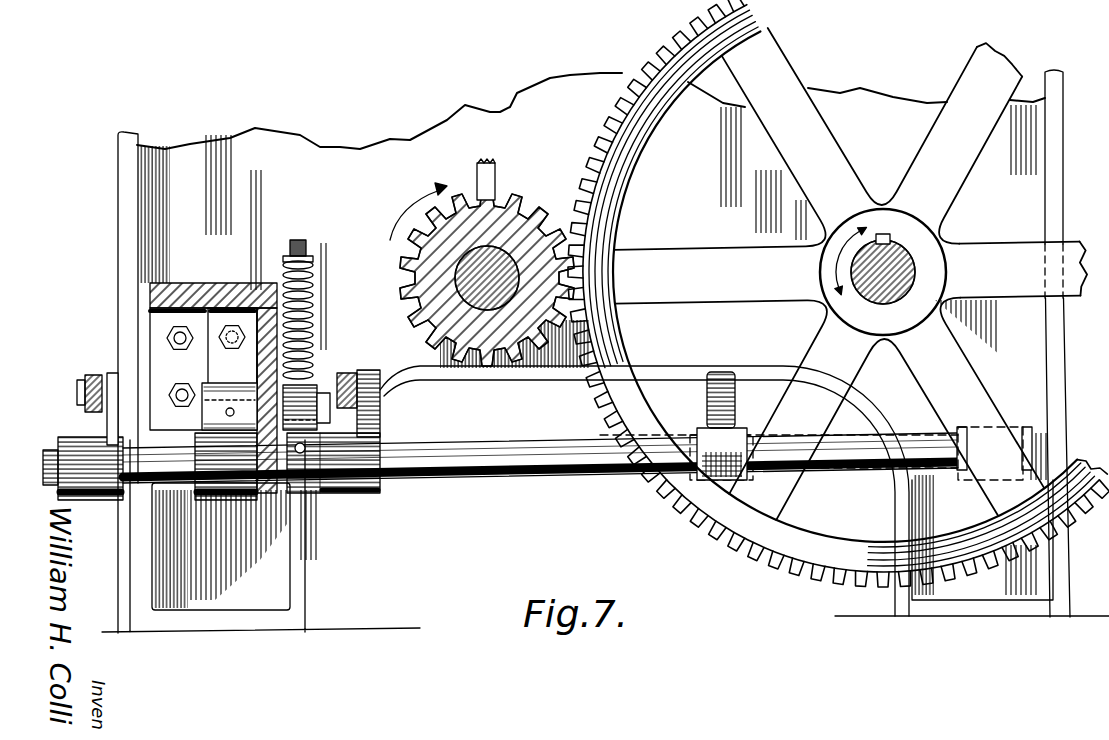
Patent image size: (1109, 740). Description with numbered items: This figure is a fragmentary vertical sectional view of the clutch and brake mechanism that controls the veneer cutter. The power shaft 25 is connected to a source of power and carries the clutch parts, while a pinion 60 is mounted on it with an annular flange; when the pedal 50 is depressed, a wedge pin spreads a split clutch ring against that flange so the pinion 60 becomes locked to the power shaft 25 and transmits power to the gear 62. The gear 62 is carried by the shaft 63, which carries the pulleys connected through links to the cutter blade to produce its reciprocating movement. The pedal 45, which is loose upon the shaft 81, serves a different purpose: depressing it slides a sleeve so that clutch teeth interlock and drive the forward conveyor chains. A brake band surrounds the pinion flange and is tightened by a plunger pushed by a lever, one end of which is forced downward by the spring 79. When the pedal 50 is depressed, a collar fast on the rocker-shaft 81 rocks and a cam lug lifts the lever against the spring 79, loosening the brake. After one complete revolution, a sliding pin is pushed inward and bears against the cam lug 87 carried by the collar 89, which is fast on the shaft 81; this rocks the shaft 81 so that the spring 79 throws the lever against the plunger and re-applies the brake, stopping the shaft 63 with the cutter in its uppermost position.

The power shaft 25 is at (523, 202).
The pedal 45 is at (84, 383).
The pedal 50 is at (348, 373).
The pinion 60 is at (406, 299).
The gear 62 is at (797, 547).
The shaft 63 is at (912, 294).
The spring 79 is at (310, 283).
The rocker-shaft 81 is at (427, 476).
The cam lug 87 is at (770, 394).
The collar 89 is at (700, 438).